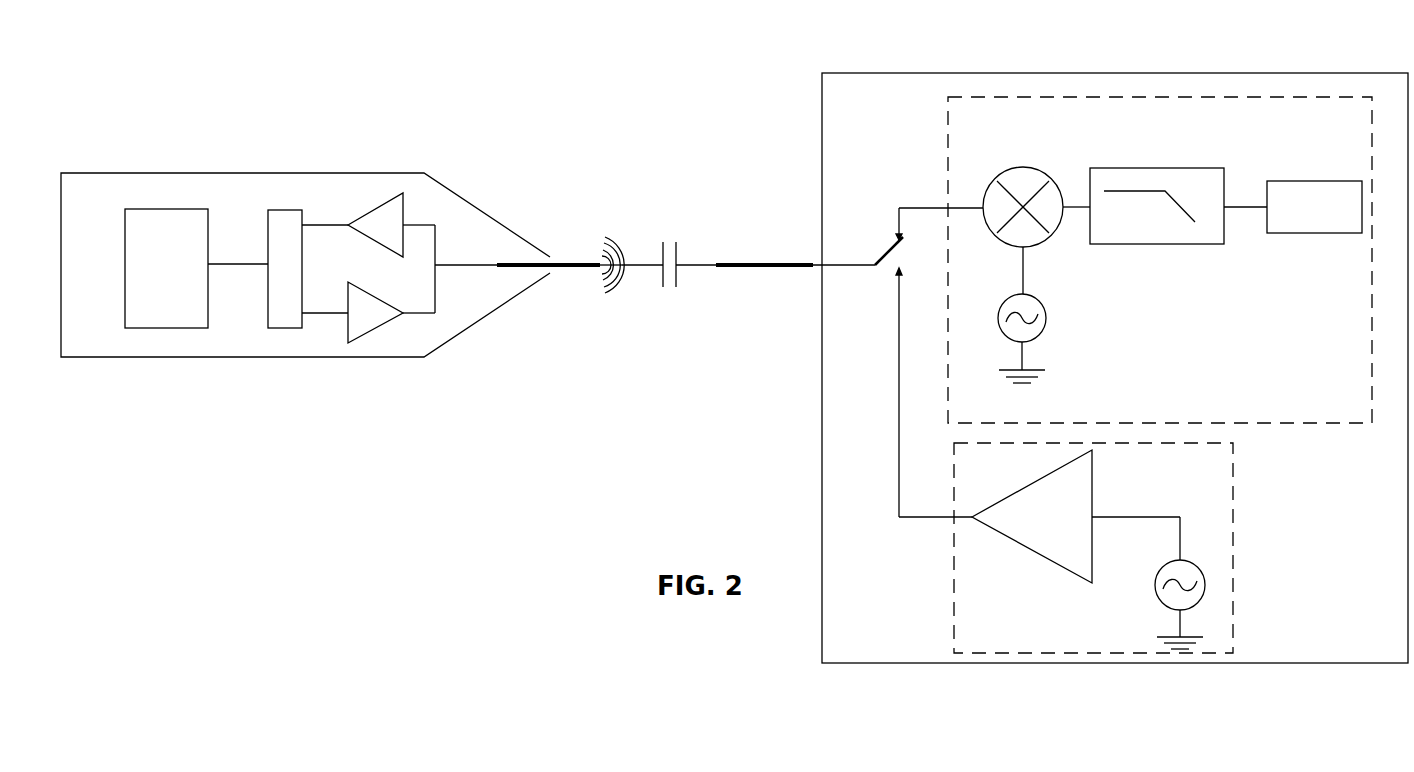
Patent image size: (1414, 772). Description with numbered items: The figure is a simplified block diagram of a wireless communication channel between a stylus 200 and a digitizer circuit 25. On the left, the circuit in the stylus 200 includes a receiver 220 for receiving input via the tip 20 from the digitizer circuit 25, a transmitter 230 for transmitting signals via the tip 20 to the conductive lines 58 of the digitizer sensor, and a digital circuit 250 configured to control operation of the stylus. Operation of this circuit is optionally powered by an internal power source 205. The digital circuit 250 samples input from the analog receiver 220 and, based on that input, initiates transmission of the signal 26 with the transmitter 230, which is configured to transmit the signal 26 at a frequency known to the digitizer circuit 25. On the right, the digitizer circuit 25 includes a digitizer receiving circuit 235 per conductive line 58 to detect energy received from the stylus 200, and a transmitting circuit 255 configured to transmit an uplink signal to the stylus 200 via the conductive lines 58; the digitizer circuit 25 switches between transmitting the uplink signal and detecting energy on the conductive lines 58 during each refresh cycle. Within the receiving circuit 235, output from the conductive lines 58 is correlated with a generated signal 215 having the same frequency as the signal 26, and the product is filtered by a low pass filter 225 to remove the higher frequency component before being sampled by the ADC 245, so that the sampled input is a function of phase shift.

The stylus 200 is at (158, 173).
The internal power source 205 is at (134, 252).
The digital circuit 250 is at (290, 328).
The receiver 220 is at (385, 200).
The transmitter 230 is at (383, 322).
The tip 20 is at (556, 265).
The signal 26 is at (603, 212).
The conductive lines 58 is at (785, 265).
The digitizer circuit 25 is at (1380, 73).
The digitizer receiving circuit 235 is at (985, 97).
The generated signal 215 is at (1046, 322).
The low pass filter 225 is at (1200, 244).
The ADC 245 is at (1320, 233).
The transmitting circuit 255 is at (1233, 503).